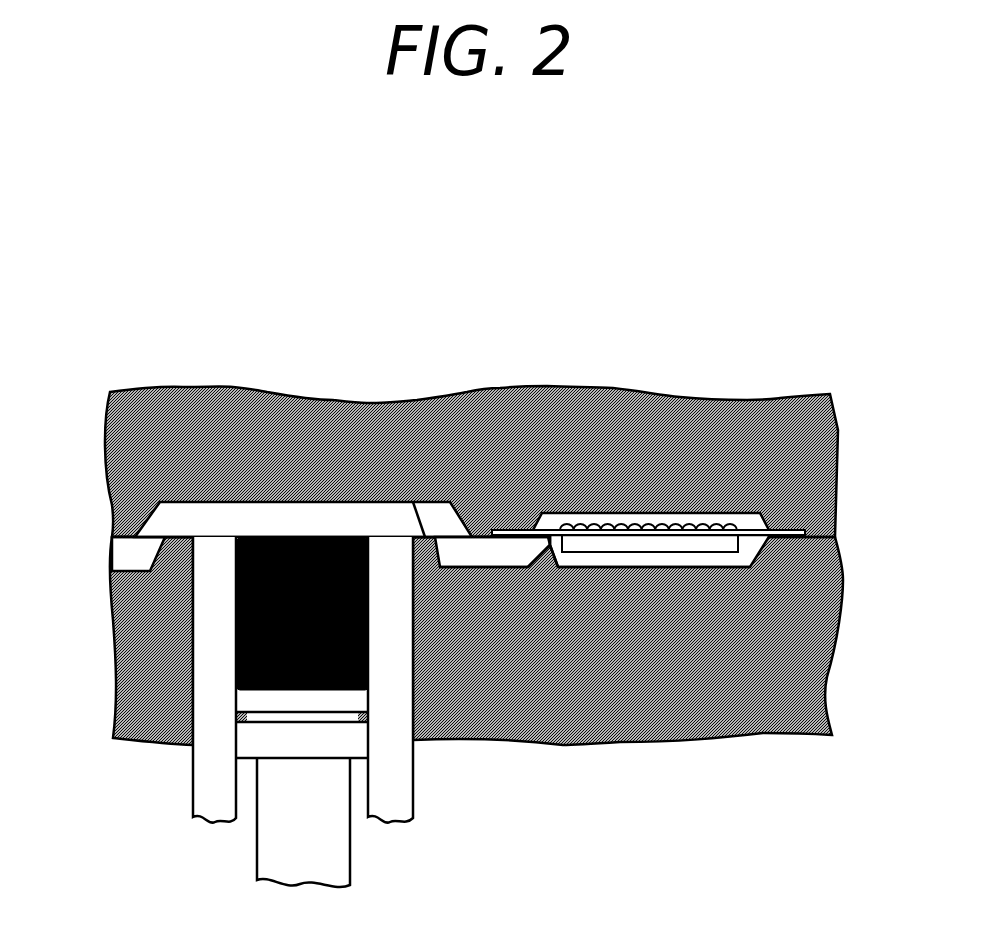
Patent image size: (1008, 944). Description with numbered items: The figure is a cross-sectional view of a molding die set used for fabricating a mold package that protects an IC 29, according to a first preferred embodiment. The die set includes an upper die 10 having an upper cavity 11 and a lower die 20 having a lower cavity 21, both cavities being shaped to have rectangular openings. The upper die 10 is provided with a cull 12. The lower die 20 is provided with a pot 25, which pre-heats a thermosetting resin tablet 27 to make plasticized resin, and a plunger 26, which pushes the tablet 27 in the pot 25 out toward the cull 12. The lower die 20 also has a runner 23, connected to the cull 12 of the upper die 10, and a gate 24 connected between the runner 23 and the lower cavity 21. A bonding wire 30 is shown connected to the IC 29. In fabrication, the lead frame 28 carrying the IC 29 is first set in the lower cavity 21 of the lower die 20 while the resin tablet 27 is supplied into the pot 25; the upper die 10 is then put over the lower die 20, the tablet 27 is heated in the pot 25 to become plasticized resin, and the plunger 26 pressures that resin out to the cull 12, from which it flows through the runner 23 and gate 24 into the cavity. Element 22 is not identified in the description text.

The upper die 10 is at (377, 410).
The lower die 20 is at (767, 737).
The upper cavity 11 is at (745, 513).
The cull 12 is at (248, 505).
The lower cavity 21 is at (757, 552).
The passage 22 is at (548, 567).
The runner 23 is at (482, 566).
The gate 24 is at (527, 545).
The pot 25 is at (202, 648).
The plunger 26 is at (248, 745).
The thermosetting resin tablet 27 is at (203, 588).
The lead frame 28 is at (497, 535).
The IC 29 is at (643, 568).
The bonding wire 30 is at (593, 522).